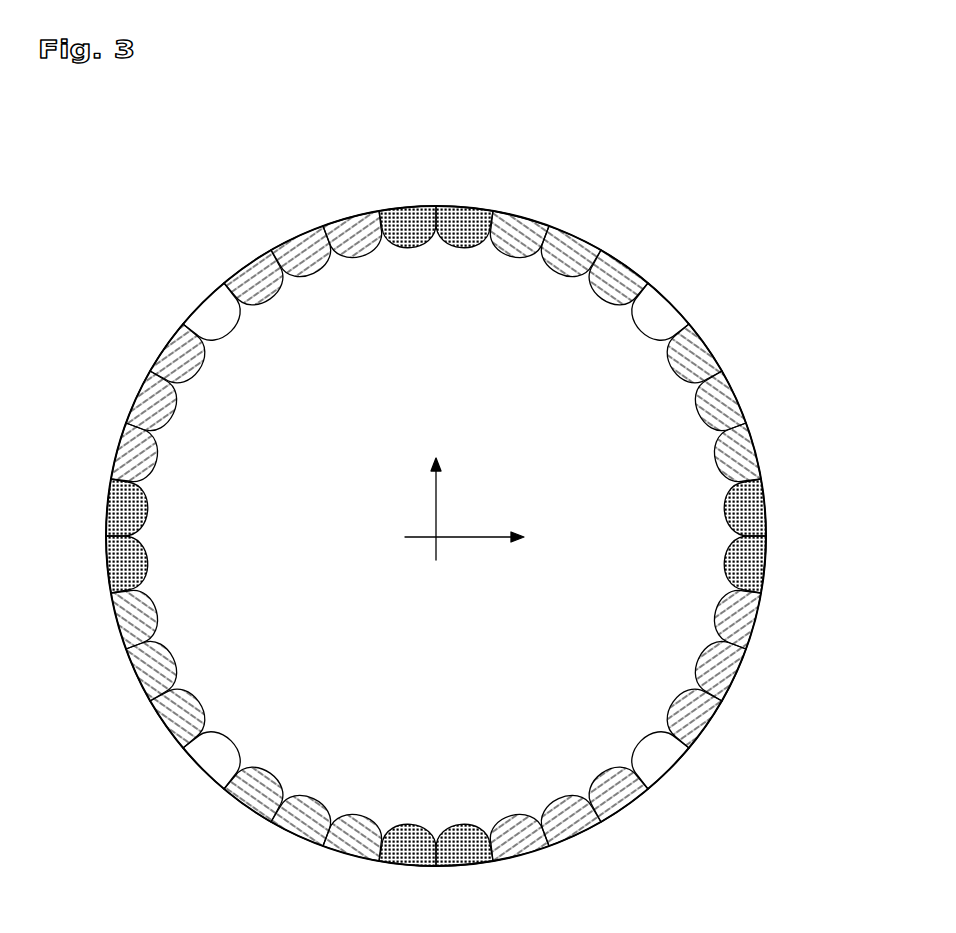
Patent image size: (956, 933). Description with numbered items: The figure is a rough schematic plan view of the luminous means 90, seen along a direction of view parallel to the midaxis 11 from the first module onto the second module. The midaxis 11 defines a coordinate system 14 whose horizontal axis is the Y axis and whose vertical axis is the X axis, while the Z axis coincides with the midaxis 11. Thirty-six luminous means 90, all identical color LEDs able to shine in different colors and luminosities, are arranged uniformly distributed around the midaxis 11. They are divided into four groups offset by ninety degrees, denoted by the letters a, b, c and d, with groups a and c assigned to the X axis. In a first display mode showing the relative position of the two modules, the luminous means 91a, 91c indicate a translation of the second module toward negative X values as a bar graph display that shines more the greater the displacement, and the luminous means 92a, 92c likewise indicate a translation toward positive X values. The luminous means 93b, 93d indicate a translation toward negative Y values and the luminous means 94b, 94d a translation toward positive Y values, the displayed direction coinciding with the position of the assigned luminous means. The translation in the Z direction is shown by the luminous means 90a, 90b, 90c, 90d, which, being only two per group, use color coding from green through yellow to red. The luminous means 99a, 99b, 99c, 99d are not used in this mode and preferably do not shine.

The midaxis 11 is at (430, 542).
The coordinate system 14 is at (366, 514).
The luminous means 90 is at (406, 243).
The luminous means 90a is at (777, 476).
The luminous means 90b is at (376, 877).
The luminous means 90c is at (95, 476).
The luminous means 90d is at (496, 195).
The luminous means 91a is at (701, 758).
The luminous means 91c is at (95, 596).
The luminous means 92a is at (701, 314).
The luminous means 92c is at (171, 314).
The luminous means 93b is at (214, 801).
The luminous means 93d is at (376, 195).
The luminous means 94b is at (496, 877).
The luminous means 94d is at (496, 195).
The luminous means 99a is at (662, 762).
The luminous means 99b is at (204, 762).
The luminous means 99c is at (204, 312).
The luminous means 99d is at (662, 312).